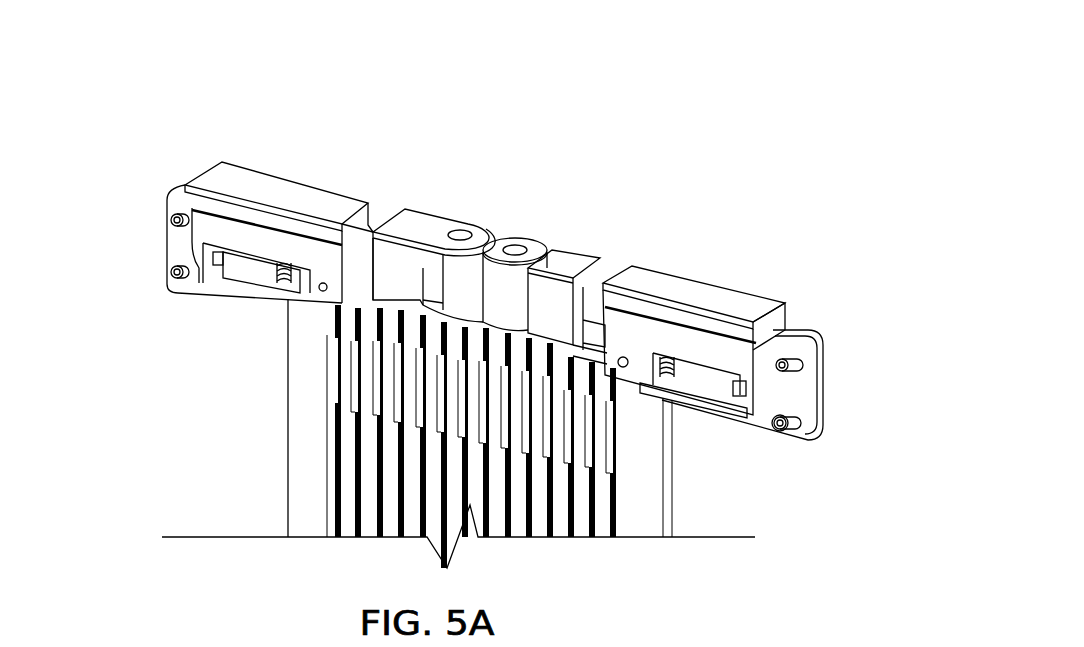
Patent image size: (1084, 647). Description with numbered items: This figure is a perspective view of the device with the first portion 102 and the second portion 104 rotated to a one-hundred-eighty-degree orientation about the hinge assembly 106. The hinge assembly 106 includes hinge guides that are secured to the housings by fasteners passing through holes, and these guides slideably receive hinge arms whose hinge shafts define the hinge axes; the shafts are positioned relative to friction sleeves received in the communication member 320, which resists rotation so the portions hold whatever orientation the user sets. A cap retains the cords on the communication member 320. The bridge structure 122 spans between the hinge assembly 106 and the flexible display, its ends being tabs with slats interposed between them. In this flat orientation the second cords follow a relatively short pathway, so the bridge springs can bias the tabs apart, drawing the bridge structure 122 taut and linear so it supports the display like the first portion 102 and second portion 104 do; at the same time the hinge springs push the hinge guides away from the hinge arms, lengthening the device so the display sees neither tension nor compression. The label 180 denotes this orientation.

The hinge assembly 106 is at (752, 62).
The first portion 102 is at (152, 170).
The second portion 104 is at (840, 370).
The bridge structure 122 is at (287, 441).
The communication member 320 is at (487, 302).
The gap line GL180 180 is at (389, 198).